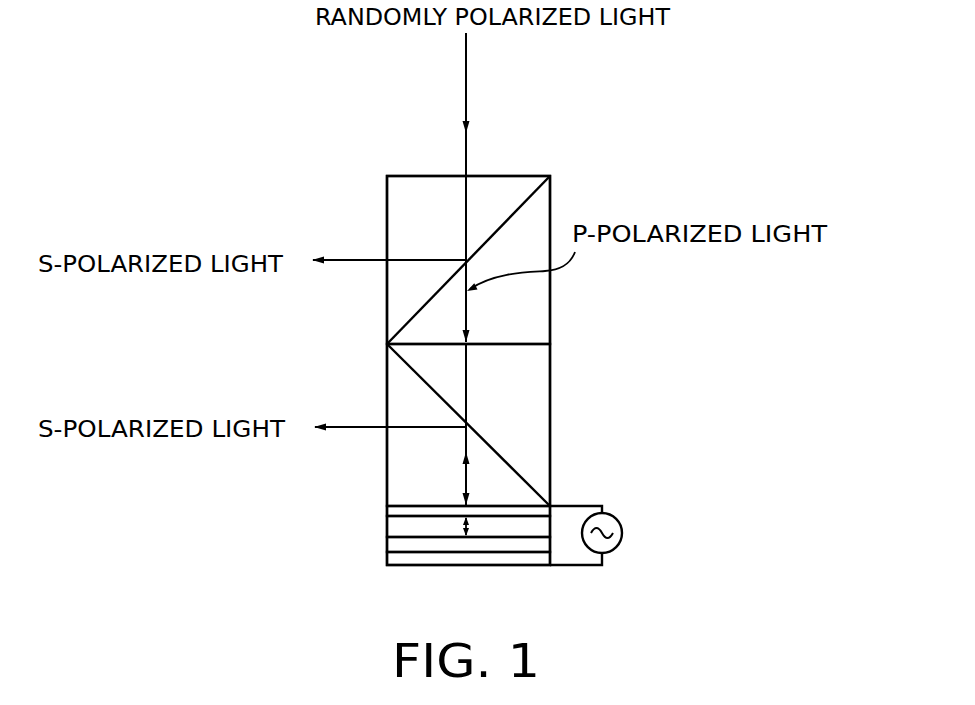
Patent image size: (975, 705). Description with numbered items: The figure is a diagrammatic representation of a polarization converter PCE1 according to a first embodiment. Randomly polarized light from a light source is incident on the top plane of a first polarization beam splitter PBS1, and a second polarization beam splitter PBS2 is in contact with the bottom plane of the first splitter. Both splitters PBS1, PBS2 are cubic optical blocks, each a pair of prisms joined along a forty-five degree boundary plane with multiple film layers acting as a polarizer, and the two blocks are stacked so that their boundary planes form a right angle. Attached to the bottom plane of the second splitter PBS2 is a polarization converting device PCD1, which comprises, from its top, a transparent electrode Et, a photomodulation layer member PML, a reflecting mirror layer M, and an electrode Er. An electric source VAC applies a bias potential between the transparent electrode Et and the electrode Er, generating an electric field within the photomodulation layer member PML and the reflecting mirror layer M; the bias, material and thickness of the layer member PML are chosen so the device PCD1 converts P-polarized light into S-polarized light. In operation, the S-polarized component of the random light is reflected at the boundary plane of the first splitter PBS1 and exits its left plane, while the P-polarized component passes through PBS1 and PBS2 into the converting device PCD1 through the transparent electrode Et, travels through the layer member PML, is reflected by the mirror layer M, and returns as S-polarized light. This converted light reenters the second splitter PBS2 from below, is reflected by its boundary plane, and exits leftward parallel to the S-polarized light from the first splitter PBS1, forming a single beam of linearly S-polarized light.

The polarization converter PCE1 is at (381, 174).
The first polarization beam splitter PBS1 is at (489, 204).
The second polarization beam splitter PBS2 is at (413, 456).
The transparent electrode Et is at (412, 506).
The photomodulation layer member PML is at (397, 528).
The reflecting mirror layer M is at (397, 547).
The electrode Er is at (442, 567).
The polarization converting device PCD1 is at (638, 534).
The electric source VAC is at (623, 537).